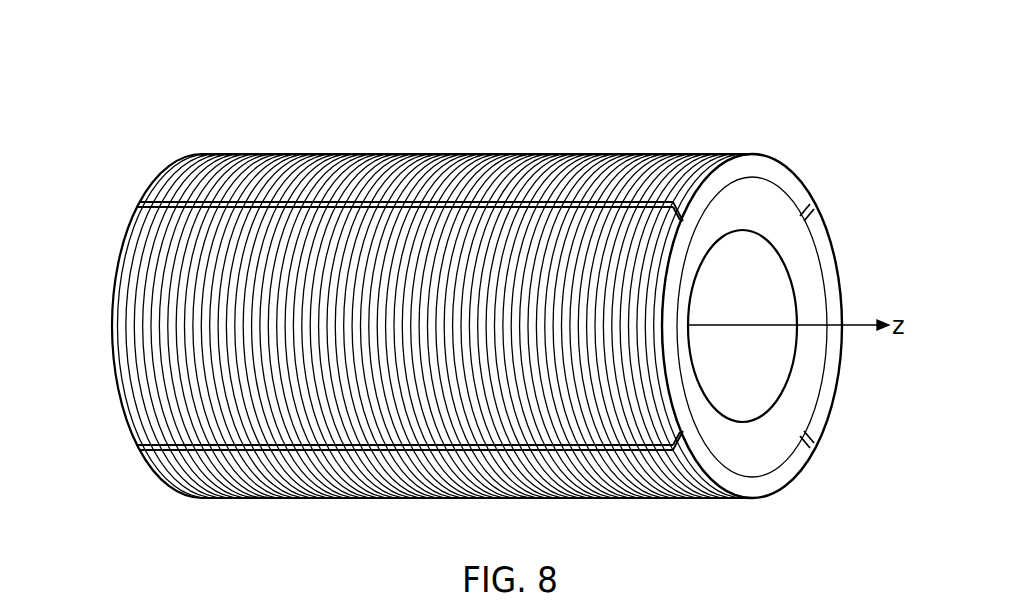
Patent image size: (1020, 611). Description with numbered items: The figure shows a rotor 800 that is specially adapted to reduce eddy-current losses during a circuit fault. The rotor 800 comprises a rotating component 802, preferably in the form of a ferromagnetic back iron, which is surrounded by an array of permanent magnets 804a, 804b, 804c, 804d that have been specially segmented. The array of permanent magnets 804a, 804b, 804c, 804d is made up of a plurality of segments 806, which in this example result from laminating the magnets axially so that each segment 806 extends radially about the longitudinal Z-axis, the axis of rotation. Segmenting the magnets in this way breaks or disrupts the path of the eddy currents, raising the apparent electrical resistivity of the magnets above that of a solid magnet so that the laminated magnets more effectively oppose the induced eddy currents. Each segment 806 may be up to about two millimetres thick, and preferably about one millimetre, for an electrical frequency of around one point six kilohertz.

The rotor 800 is at (866, 130).
The rotating component 802 is at (798, 250).
The permanent magnet 804a is at (756, 163).
The permanent magnet 804b is at (110, 316).
The permanent magnet 804c is at (755, 487).
The permanent magnet 804d is at (820, 416).
The segment 806 is at (158, 470).